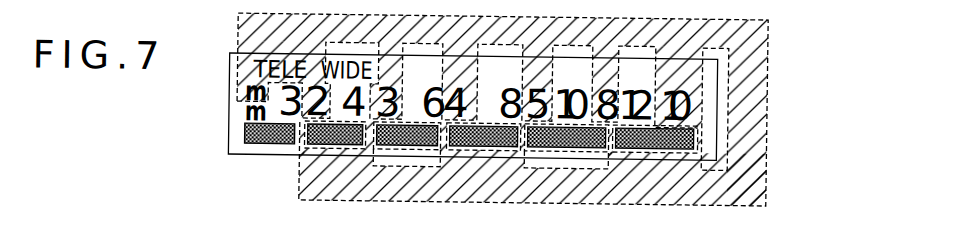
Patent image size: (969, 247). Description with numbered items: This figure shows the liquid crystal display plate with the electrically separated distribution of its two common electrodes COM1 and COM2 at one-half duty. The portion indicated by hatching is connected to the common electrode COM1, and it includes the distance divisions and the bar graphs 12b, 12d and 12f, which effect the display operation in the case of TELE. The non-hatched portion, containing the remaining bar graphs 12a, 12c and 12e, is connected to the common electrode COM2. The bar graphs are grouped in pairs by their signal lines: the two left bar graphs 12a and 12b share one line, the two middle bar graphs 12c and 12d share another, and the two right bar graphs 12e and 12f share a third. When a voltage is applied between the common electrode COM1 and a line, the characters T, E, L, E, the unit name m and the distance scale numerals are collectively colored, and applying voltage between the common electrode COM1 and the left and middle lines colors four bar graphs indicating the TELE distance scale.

The bar graph 12a is at (258, 146).
The bar graph 12b is at (332, 146).
The bar graph 12c is at (396, 143).
The bar graph 12d is at (492, 137).
The bar graph 12e is at (570, 141).
The bar graph 12f is at (653, 143).
The common electrode COM1 is at (463, 180).
The common electrode COM2 is at (242, 116).